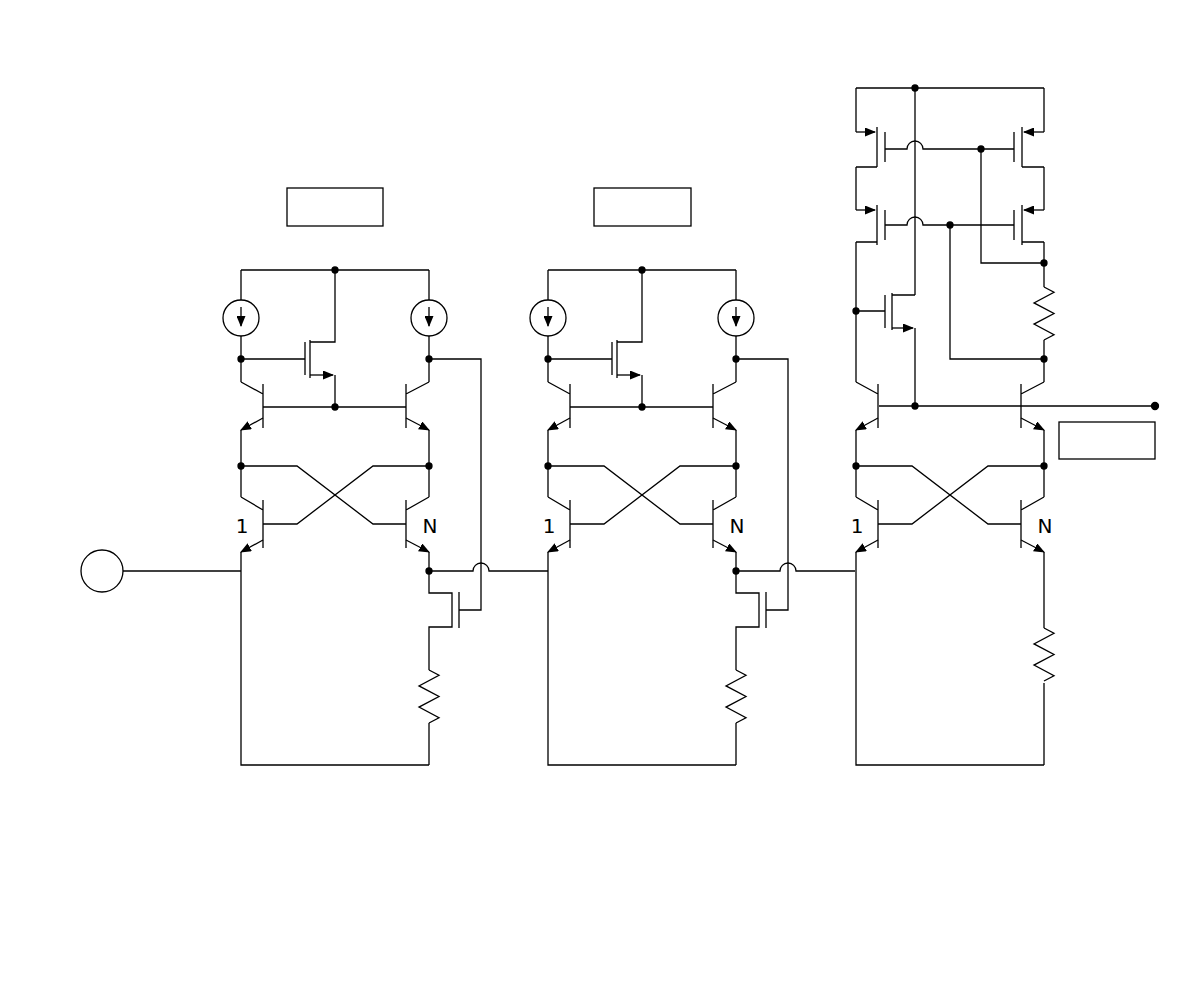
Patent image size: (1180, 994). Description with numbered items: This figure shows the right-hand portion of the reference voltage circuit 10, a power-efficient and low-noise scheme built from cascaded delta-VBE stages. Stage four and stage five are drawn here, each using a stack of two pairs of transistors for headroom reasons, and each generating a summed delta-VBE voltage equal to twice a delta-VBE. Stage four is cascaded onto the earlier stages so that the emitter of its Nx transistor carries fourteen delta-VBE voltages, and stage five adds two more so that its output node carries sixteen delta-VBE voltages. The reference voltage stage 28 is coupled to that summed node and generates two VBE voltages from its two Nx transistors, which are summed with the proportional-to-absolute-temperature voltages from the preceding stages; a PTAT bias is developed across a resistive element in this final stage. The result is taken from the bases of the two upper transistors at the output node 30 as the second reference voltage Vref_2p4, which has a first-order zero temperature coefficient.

The reference voltage circuit 10 is at (156, 86).
The reference voltage stage 28 is at (1038, 50).
The output node 30 is at (1097, 406).